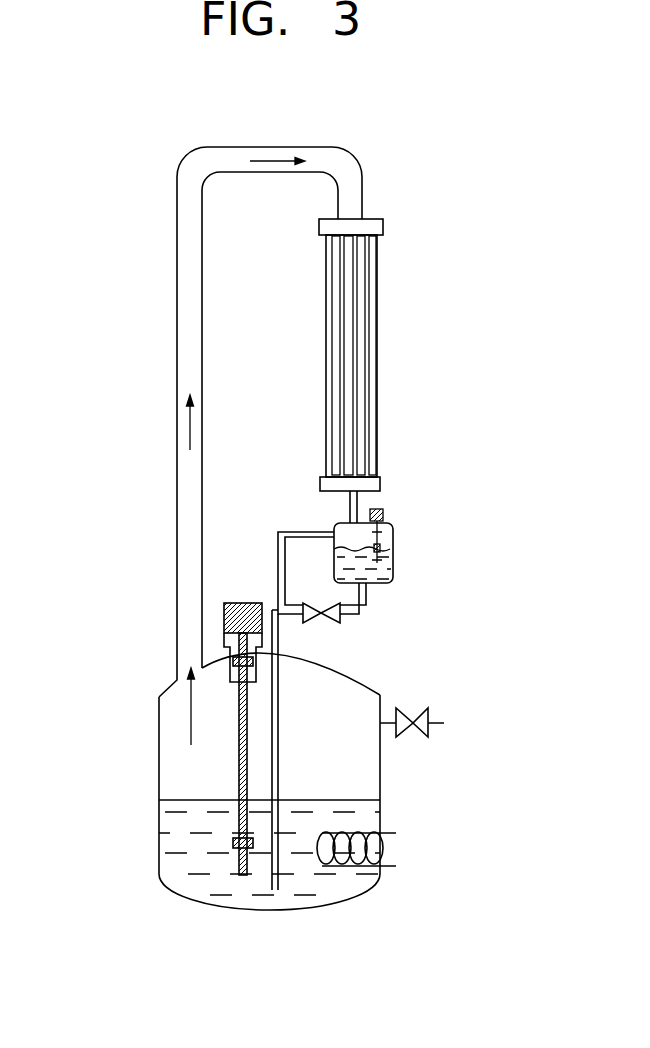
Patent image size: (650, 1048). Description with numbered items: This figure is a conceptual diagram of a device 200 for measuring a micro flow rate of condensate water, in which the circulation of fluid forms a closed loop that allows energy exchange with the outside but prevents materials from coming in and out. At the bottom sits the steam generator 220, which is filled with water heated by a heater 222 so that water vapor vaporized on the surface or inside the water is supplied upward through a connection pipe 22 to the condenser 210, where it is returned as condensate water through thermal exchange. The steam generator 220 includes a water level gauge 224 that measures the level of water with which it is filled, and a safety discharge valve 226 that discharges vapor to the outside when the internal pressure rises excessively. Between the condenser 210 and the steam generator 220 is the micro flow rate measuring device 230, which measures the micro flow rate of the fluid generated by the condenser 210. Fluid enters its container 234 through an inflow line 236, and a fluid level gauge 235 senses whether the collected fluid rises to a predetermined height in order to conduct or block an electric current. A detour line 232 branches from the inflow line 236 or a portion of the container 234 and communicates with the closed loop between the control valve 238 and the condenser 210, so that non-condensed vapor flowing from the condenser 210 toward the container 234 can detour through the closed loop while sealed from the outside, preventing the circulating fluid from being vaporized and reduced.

The device for measuring a micro flow rate of condensate water 200 is at (124, 148).
The connection pipe 22 is at (177, 289).
The condenser 210 is at (402, 296).
The inflow line 236 is at (357, 505).
The micro flow rate measuring device 230 is at (408, 512).
The fluid level gauge 235 is at (383, 545).
The container 234 is at (393, 557).
The detour line 232 is at (293, 532).
The control valve 238 is at (320, 615).
The water level gauge 224 is at (243, 603).
The steam generator 220 is at (379, 662).
The safety discharge valve 226 is at (412, 722).
The heater 222 is at (383, 833).